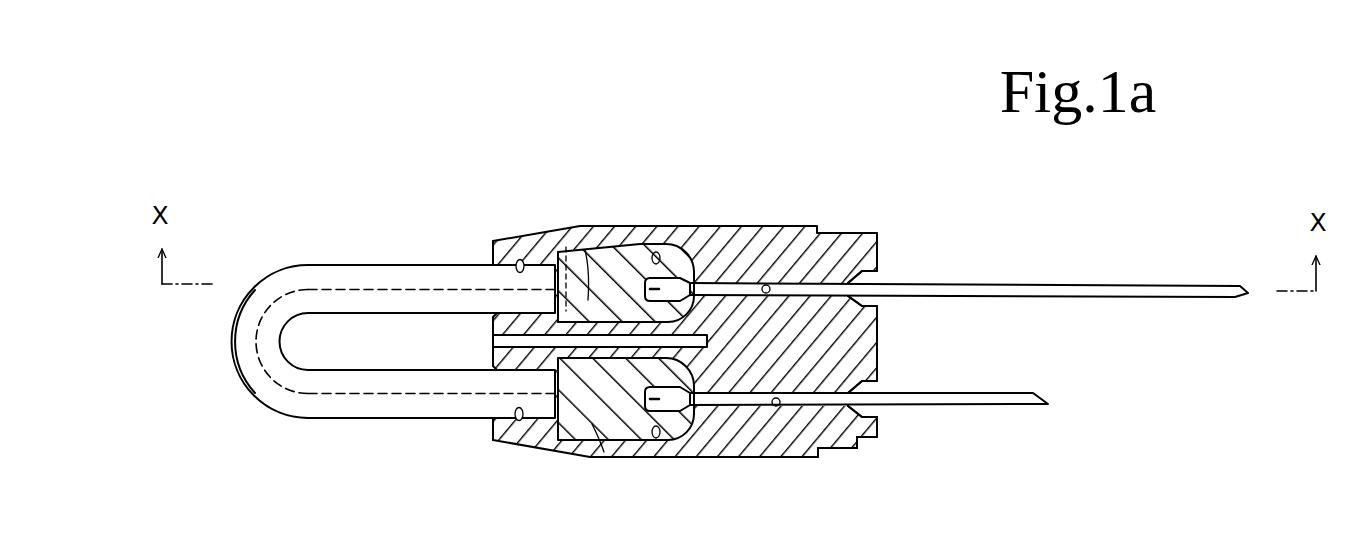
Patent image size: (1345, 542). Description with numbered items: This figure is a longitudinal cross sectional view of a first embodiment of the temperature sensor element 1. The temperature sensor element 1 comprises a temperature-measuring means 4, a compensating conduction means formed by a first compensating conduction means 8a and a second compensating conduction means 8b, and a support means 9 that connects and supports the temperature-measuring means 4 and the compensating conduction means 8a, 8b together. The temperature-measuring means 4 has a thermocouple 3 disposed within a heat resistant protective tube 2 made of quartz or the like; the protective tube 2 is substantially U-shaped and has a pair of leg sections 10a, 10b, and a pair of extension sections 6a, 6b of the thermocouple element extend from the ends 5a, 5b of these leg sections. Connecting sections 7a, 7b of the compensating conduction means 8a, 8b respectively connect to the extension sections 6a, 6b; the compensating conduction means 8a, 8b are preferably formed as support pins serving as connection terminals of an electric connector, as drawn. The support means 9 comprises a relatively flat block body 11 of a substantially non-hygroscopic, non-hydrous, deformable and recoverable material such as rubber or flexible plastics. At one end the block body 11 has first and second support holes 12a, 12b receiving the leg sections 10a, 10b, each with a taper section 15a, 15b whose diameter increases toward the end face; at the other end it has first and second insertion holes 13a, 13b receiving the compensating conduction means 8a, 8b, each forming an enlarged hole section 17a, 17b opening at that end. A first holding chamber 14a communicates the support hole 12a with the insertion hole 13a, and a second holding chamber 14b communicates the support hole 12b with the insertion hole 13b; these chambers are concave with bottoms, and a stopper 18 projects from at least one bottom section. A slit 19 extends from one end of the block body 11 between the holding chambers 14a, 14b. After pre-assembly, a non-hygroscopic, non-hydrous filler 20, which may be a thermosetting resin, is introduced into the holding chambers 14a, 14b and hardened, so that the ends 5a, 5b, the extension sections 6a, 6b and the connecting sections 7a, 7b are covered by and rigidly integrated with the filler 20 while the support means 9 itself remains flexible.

The temperature sensor element 1 is at (849, 212).
The protective tube 2 is at (392, 334).
The thermocouple 3 is at (277, 388).
The temperature-measuring means 4 is at (236, 383).
The end of leg section 5a is at (540, 262).
The end of leg section 5b is at (547, 411).
The extension section 6a is at (621, 256).
The extension section 6b is at (623, 428).
The connecting section 7a is at (681, 279).
The connecting section 7b is at (681, 408).
The first compensating conduction means 8a is at (1024, 284).
The second compensating conduction means 8b is at (1008, 409).
The support means 9 is at (831, 453).
The block body 11 is at (837, 442).
The leg section 10a is at (360, 265).
The leg section 10b is at (358, 418).
The first support hole 12a is at (518, 259).
The second support hole 12b is at (517, 421).
The first insertion hole 13a is at (769, 285).
The second insertion hole 13b is at (774, 406).
The first holding chamber 14a is at (660, 254).
The second holding chamber 14b is at (658, 438).
The taper section 15a is at (493, 264).
The taper section 15b is at (493, 418).
The enlarged hole section 17a is at (868, 281).
The enlarged hole section 17b is at (868, 391).
The stopper 18 is at (566, 245).
The slit 19 is at (493, 337).
The filler 20 is at (590, 266).